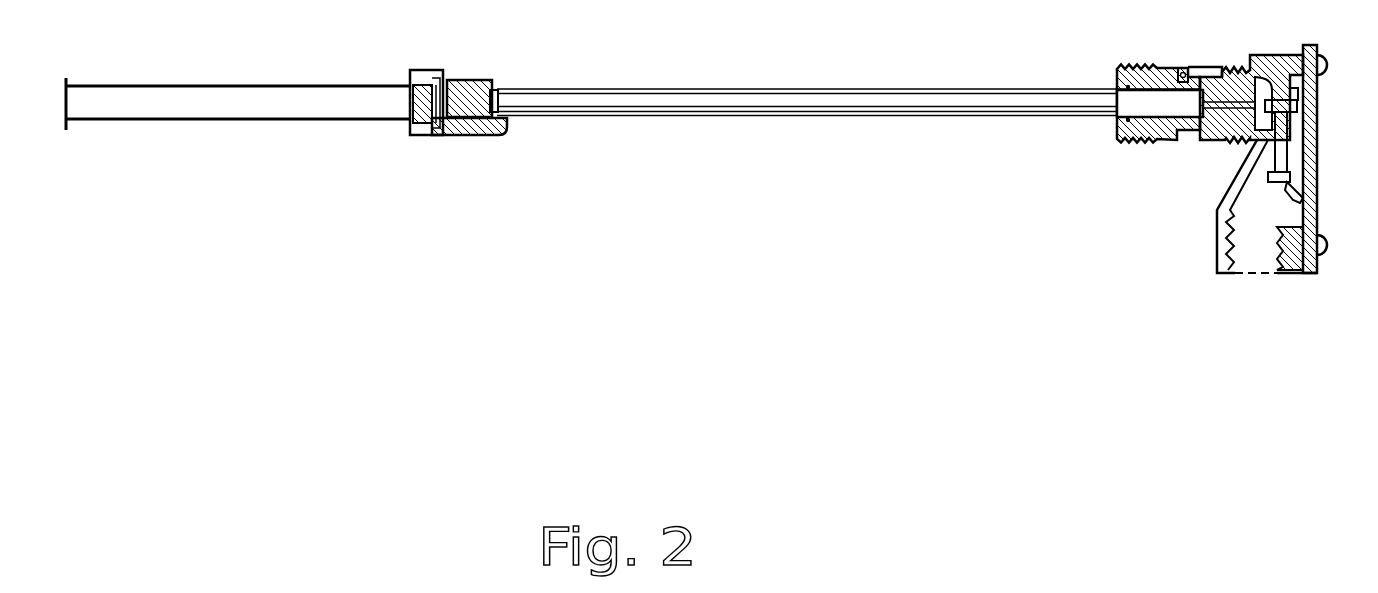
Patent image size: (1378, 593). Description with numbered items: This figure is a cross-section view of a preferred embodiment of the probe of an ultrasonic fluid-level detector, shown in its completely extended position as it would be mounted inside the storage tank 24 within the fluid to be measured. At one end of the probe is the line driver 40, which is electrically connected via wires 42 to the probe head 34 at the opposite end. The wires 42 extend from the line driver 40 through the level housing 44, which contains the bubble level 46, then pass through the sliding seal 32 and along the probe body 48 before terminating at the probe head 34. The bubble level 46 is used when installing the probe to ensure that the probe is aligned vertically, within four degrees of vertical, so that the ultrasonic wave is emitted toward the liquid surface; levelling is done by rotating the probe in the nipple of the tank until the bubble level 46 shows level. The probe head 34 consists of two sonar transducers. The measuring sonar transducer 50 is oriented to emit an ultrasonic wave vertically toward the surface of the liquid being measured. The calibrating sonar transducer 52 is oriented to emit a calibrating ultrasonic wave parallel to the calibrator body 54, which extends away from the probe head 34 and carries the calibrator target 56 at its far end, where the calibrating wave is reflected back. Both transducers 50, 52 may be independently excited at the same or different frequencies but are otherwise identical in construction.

The storage tank 24 is at (1217, 245).
The sliding seal 32 is at (1137, 143).
The probe head 34 is at (465, 130).
The line driver 40 is at (1287, 133).
The wires 42 is at (1062, 110).
The level housing 44 is at (1205, 147).
The bubble level 46 is at (1212, 70).
The probe body 48 is at (1032, 117).
The measuring sonar transducer 50 is at (465, 78).
The calibrating sonar transducer 52 is at (412, 103).
The calibrator body 54 is at (288, 122).
The calibrator target 56 is at (69, 126).